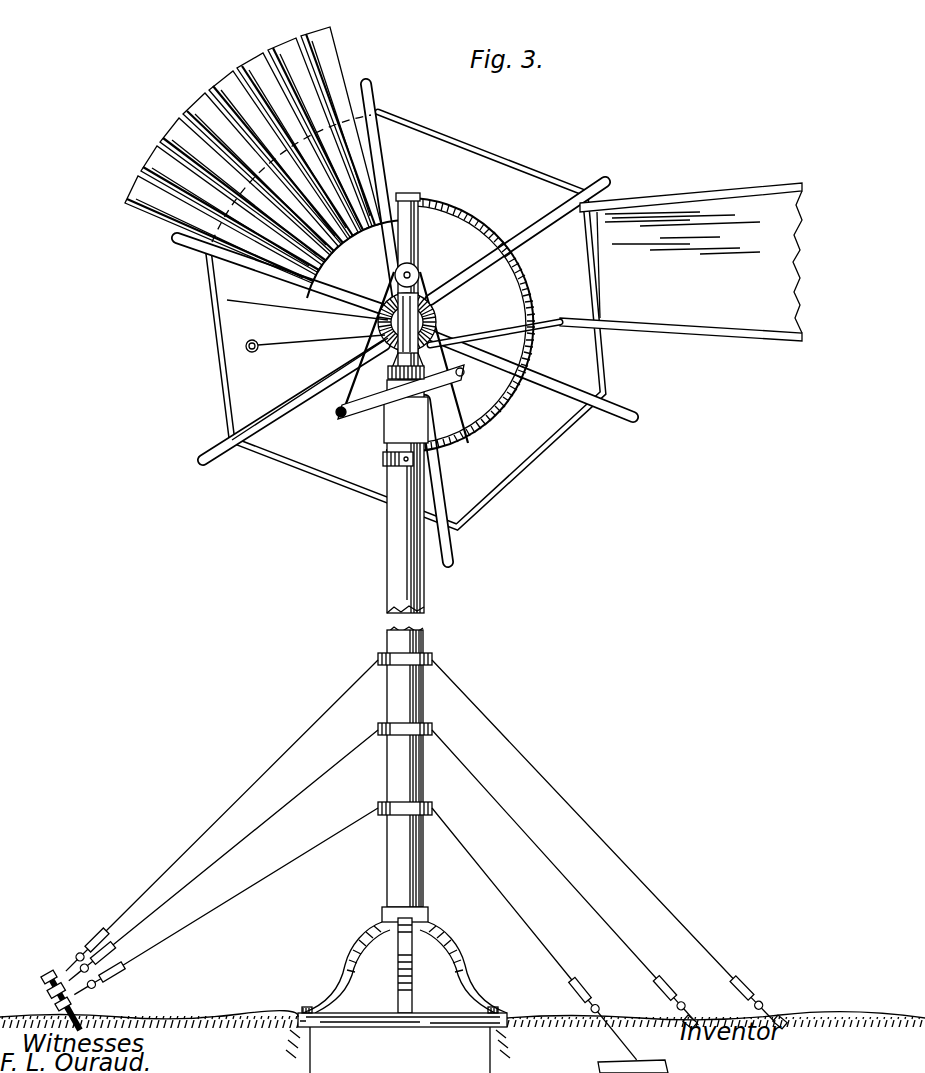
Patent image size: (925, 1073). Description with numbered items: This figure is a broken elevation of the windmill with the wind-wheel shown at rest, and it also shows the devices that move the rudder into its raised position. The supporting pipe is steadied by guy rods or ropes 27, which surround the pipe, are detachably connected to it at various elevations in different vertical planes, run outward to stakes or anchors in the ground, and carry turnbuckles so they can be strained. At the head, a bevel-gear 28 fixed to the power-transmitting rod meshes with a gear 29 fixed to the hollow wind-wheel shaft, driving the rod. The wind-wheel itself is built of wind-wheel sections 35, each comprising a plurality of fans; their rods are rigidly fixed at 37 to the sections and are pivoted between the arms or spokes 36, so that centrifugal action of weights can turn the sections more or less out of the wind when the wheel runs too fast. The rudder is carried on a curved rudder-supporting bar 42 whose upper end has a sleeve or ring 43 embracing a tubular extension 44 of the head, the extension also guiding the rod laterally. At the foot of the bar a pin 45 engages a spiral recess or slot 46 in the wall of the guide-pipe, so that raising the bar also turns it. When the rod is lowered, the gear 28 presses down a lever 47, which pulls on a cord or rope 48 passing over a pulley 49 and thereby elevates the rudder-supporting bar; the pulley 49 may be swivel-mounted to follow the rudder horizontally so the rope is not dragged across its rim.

The guy rods or ropes 27 is at (414, 863).
The bevel-gear 28 is at (392, 375).
The gear 29 is at (375, 338).
The wind-wheel sections 35 is at (264, 162).
The arms or spokes 36 is at (538, 230).
The fixing point of rods to sections 37 is at (246, 346).
The rudder-supporting bar 42 is at (616, 276).
The sleeve or ring 43 is at (430, 207).
The tubular extension 44 is at (415, 185).
The pin 45 is at (383, 462).
The spiral recess or slot 46 is at (386, 503).
The lever 47 is at (357, 420).
The cord or rope 48 is at (343, 410).
The pulley 49 is at (419, 275).